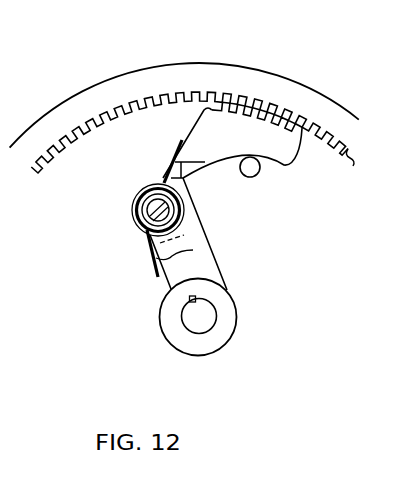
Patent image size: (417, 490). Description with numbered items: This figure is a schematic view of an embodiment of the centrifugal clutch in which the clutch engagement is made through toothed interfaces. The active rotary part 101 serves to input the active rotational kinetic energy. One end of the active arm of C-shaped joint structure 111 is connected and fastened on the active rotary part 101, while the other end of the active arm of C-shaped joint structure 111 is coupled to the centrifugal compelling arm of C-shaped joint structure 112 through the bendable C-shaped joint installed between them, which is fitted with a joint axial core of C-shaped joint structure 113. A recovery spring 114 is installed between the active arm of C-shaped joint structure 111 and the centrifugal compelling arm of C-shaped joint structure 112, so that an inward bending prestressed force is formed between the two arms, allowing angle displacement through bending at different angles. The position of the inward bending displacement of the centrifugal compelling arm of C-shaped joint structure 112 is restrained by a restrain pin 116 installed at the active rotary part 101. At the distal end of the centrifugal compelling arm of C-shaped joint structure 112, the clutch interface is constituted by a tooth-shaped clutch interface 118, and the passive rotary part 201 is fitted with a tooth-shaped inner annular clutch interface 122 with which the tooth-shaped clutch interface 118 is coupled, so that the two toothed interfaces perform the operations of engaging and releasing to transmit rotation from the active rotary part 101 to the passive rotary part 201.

The passive rotary part 201 is at (201, 109).
The tooth-shaped inner annular clutch interface 122 is at (343, 148).
The tooth-shaped clutch interface 118 is at (258, 117).
The restrain pin 116 is at (252, 173).
The centrifugal compelling arm of C-shaped joint structure 112 is at (187, 137).
The joint axial core of C-shaped joint structure 113 is at (143, 208).
The recovery spring 114 is at (153, 260).
The active arm of C-shaped joint structure 111 is at (193, 267).
The active rotary part 101 is at (207, 317).